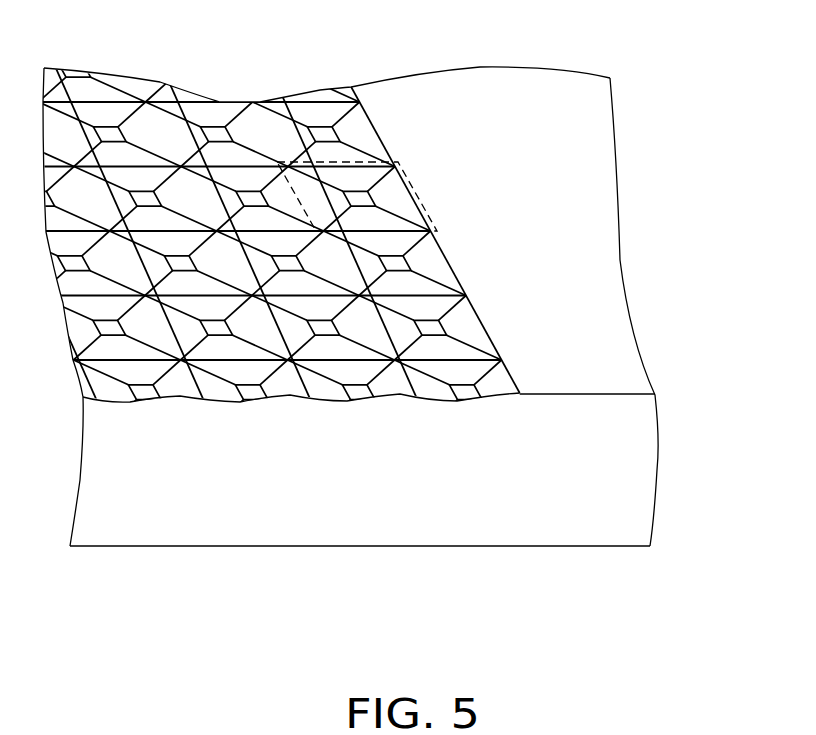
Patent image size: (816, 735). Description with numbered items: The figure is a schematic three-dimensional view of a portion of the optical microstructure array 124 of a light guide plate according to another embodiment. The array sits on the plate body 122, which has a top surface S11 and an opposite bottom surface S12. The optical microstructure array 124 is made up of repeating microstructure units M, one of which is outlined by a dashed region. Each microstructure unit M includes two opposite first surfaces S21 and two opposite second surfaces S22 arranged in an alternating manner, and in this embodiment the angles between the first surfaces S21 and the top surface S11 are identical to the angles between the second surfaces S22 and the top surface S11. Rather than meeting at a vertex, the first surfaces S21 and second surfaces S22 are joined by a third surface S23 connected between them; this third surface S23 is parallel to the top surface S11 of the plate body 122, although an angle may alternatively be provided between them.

The plate body 122 is at (628, 458).
The optical microstructure array 124 is at (476, 314).
The top surface S11 is at (577, 287).
The bottom surface S12 is at (568, 547).
The first surfaces S21 is at (287, 330).
The second surfaces S22 is at (305, 303).
The third surface S23 is at (323, 328).
The microstructure unit M is at (403, 177).